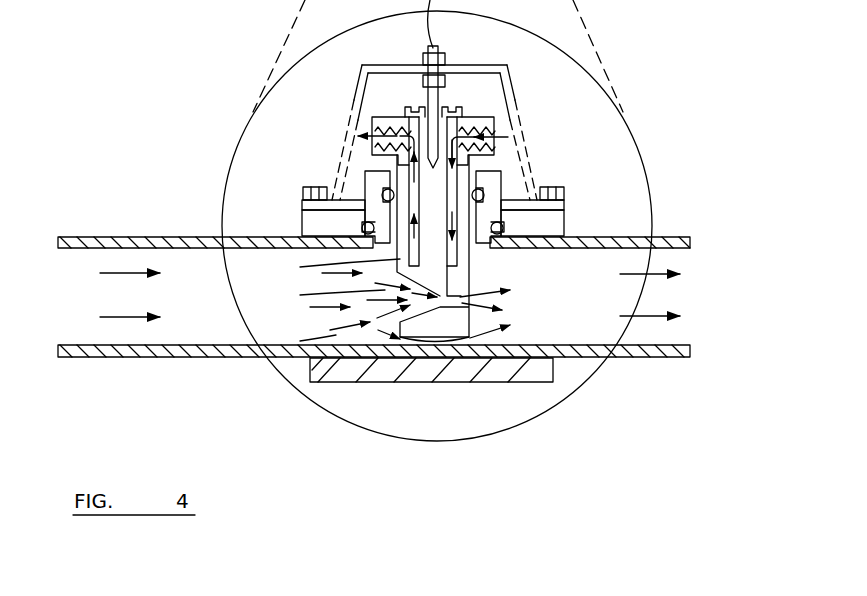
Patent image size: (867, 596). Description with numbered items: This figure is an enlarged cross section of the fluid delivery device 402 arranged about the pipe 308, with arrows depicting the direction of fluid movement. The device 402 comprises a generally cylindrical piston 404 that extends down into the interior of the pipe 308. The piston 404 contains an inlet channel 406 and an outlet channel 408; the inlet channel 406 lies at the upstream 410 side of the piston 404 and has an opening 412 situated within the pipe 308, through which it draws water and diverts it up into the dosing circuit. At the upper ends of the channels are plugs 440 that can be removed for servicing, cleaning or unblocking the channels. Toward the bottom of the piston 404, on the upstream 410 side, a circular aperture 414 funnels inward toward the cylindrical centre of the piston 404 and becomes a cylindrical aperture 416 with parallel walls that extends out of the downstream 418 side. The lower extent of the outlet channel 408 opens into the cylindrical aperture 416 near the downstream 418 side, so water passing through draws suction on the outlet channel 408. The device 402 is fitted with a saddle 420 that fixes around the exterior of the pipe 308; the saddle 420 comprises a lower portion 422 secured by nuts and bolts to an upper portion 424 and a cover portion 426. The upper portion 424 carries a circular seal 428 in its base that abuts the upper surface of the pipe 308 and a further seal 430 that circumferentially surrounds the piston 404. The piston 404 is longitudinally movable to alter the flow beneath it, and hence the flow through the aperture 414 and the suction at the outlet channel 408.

The pipe 308 is at (165, 353).
The fluid delivery device 402 is at (572, 108).
The piston 404 is at (435, 190).
The inlet channel 406 is at (402, 163).
The outlet channel 408 is at (450, 185).
The upstream side 410 is at (218, 304).
The opening 412 is at (314, 268).
The circular aperture 414 is at (313, 295).
The cylindrical aperture 416 is at (468, 287).
The downstream side 418 is at (610, 304).
The saddle 420 is at (598, 216).
The lower portion 422 is at (480, 372).
The upper portion 424 is at (563, 217).
The cover portion 426 is at (510, 93).
The circular seal 428 is at (358, 227).
The further seal 430 is at (381, 193).
The plugs 440 is at (406, 106).